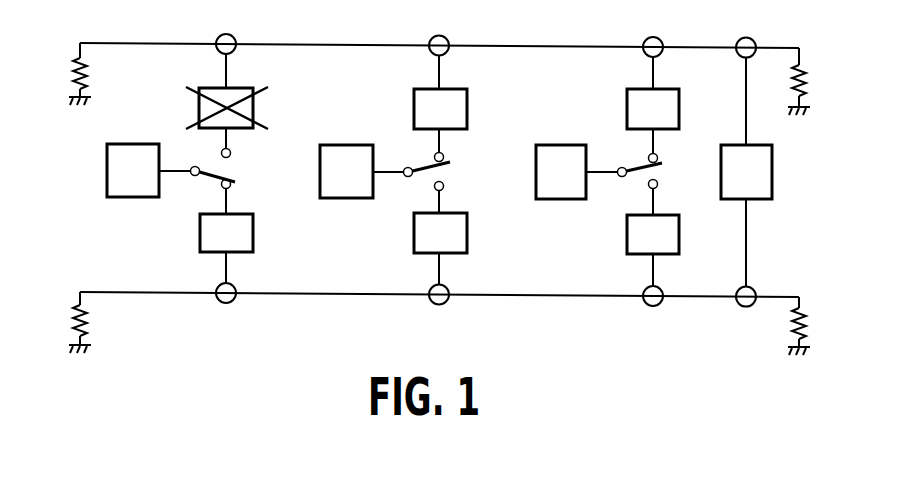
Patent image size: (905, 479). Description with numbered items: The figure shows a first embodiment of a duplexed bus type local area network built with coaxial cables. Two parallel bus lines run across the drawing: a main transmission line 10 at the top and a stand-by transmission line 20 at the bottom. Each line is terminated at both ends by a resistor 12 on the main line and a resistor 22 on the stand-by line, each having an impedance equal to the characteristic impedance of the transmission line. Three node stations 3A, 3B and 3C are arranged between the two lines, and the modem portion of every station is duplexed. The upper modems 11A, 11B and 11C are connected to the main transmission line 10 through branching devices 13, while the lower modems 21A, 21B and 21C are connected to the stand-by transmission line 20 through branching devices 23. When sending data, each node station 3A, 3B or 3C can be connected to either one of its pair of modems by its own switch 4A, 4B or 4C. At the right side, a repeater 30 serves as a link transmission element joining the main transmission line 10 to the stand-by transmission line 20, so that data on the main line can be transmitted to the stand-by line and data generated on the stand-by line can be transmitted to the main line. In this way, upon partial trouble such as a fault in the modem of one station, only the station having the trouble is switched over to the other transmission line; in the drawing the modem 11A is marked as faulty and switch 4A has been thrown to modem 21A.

The main transmission line 10 is at (153, 43).
The stand-by transmission line 20 is at (308, 296).
The resistor 12 is at (797, 83).
The resistor 22 is at (795, 322).
The branching device 13 is at (229, 34).
The branching device 23 is at (230, 303).
The modem 11A is at (253, 108).
The modem 11B is at (467, 107).
The modem 11C is at (627, 104).
The node station 3A is at (146, 143).
The node station 3B is at (357, 144).
The node station 3C is at (573, 144).
The switch 4A is at (219, 165).
The switch 4B is at (424, 164).
The switch 4C is at (638, 164).
The modem 21A is at (200, 230).
The modem 21B is at (422, 255).
The modem 21C is at (633, 256).
The repeater 30 is at (772, 190).